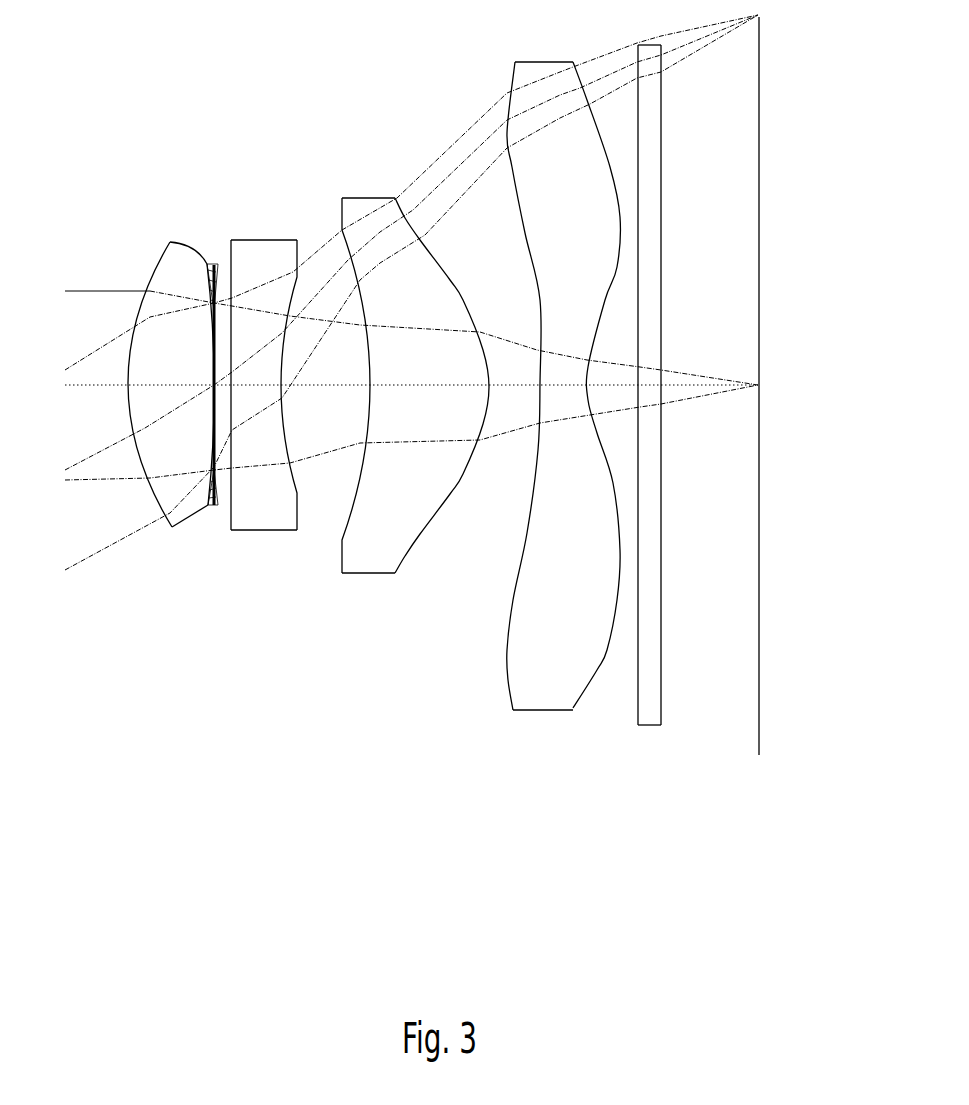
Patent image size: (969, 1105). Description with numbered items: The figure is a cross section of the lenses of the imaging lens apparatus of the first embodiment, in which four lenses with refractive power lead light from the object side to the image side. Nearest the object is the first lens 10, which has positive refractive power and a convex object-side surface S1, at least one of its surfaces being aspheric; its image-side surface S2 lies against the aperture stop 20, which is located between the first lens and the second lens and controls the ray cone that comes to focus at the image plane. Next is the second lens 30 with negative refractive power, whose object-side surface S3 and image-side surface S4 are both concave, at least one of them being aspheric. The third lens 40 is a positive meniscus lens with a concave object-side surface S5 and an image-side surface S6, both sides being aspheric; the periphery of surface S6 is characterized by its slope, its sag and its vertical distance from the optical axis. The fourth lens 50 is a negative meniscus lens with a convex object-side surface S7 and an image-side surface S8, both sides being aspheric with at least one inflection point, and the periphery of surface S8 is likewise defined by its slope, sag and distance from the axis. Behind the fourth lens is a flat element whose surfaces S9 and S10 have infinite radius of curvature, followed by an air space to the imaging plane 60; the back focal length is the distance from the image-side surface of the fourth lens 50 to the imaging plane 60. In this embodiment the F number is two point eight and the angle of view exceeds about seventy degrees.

The first lens 10 is at (193, 268).
The aperture stop 20 is at (215, 305).
The second lens 30 is at (268, 263).
The third lens 40 is at (365, 210).
The fourth lens 50 is at (528, 80).
The imaging plane 60 is at (758, 248).
The object-side surface of the first lens S1 is at (152, 485).
The image-side surface of the first lens S2 is at (213, 485).
The object-side surface of the second lens S3 is at (232, 450).
The image-side surface of the second lens S4 is at (290, 465).
The object-side surface of the third lens S5 is at (350, 503).
The image-side surface of the third lens S6 is at (458, 482).
The object-side surface of the fourth lens S7 is at (510, 677).
The image-side surface of the fourth lens S8 is at (597, 668).
The object-side surface of the plane-parallel element S9 is at (638, 700).
The image-side surface of the plane-parallel element S10 is at (662, 700).